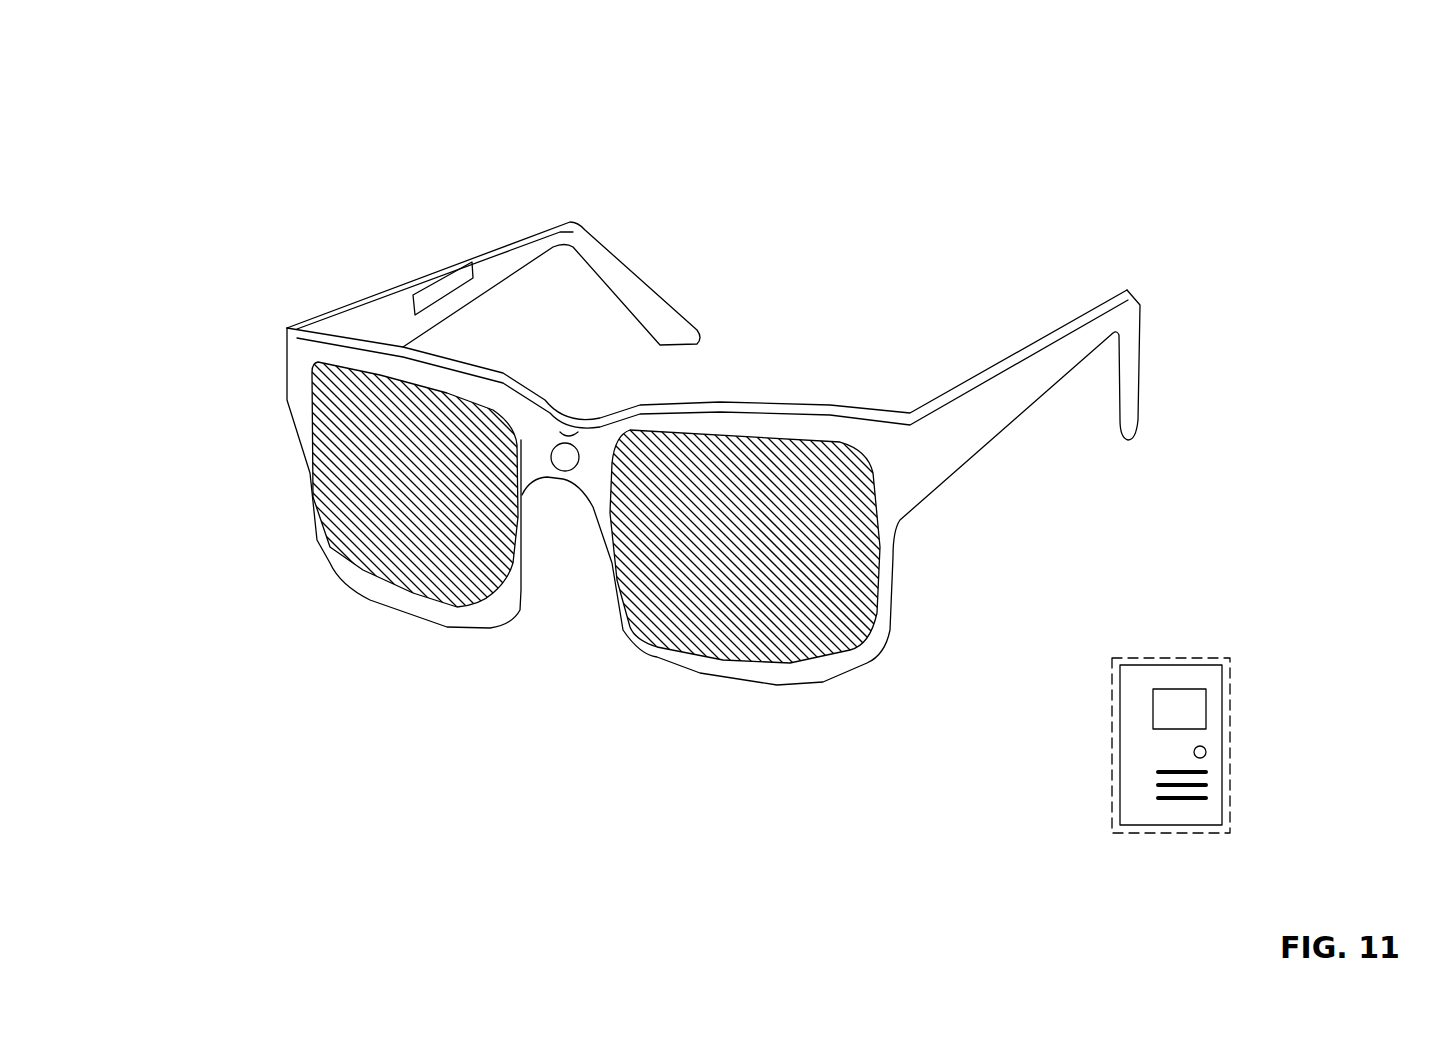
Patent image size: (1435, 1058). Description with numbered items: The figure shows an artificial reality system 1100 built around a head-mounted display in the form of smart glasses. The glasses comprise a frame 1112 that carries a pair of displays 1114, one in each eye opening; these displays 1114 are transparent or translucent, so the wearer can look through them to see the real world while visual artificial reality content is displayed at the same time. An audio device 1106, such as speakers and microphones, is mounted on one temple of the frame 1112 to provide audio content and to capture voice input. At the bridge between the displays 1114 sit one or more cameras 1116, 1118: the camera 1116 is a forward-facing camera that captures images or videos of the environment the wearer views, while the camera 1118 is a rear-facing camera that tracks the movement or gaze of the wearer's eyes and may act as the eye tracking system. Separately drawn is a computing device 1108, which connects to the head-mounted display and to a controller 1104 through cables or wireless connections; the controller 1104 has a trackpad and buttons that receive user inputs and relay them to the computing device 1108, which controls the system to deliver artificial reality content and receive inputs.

The artificial reality system 1100 is at (310, 312).
The controller 1104 is at (1192, 688).
The audio device 1106 is at (435, 280).
The computing device 1108 is at (1125, 658).
The frame 1112 is at (955, 385).
The displays 1114 is at (357, 550).
The camera 1116 is at (567, 437).
The camera 1118 is at (573, 420).